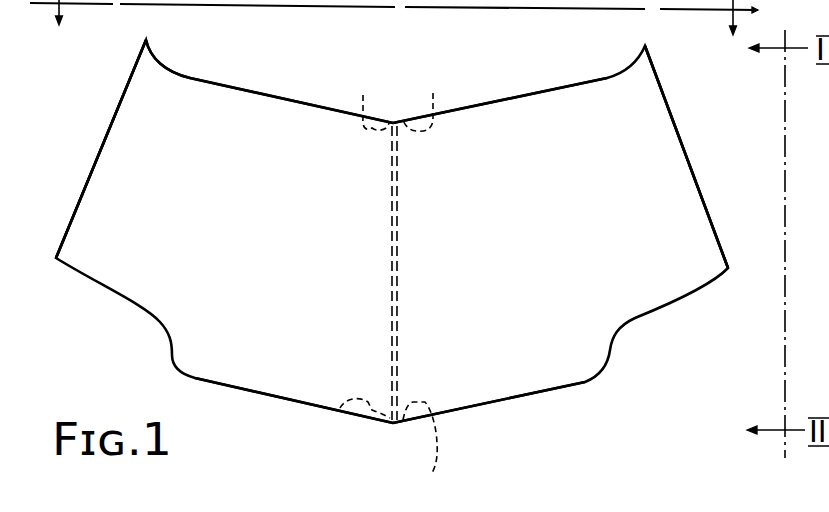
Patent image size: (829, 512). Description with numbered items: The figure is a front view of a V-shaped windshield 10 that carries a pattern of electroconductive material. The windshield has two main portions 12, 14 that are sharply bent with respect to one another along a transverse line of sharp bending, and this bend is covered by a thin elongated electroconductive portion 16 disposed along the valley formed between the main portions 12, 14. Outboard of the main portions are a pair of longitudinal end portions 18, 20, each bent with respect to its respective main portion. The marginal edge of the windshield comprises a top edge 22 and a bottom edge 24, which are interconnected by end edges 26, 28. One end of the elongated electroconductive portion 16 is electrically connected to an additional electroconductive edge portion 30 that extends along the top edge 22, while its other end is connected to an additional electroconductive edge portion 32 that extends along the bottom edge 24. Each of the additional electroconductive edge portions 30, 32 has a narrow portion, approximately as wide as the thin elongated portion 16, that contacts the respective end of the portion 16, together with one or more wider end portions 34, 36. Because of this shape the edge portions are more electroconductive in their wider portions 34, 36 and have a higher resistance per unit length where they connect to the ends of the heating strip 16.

The V-shaped windshield 10 is at (126, 353).
The main portion 12 is at (263, 232).
The main portion 14 is at (545, 238).
The elongated electroconductive portion 16 is at (395, 319).
The longitudinal end portion 18 is at (135, 174).
The longitudinal end portion 20 is at (658, 153).
The top edge 22 is at (250, 92).
The bottom edge 24 is at (502, 402).
The end edge 26 is at (86, 179).
The end edge 28 is at (692, 160).
The additional electroconductive edge portion 30 is at (393, 120).
The additional electroconductive edge portion 32 is at (398, 427).
The wider end portion 34 is at (363, 95).
The wider end portion 36 is at (437, 88).